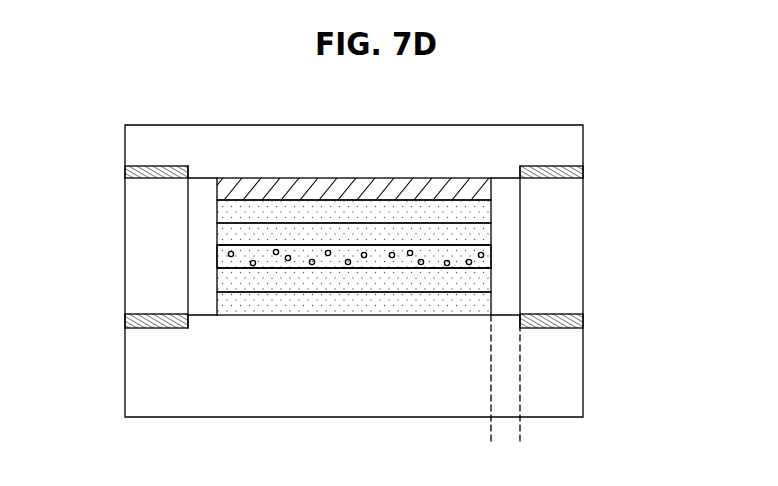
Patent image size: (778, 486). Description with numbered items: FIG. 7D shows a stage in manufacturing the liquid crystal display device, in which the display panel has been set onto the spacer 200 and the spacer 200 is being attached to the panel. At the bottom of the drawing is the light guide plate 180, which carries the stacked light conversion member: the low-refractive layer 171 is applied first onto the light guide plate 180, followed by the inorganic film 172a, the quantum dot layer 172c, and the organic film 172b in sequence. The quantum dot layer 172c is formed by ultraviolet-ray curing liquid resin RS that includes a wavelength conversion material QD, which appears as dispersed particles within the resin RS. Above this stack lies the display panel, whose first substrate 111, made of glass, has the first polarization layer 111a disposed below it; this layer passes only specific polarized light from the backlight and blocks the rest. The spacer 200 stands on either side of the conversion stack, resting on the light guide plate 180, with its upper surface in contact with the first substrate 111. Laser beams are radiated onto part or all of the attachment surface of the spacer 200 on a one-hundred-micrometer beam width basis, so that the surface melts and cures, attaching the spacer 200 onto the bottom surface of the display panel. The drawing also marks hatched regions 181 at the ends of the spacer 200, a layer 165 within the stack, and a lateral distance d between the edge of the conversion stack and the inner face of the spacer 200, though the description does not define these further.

The first substrate 111 is at (567, 148).
The first polarization layer 111a is at (478, 190).
The spacer 200 is at (567, 222).
The overcoat layer 165 is at (230, 212).
The organic film 172b is at (230, 236).
The quantum dot layer 172c is at (473, 272).
The wavelength conversion material QD is at (484, 254).
The liquid resin RS is at (483, 263).
The inorganic film 172a is at (230, 283).
The low-refractive layer 171 is at (230, 304).
The spacer 181 is at (568, 321).
The light guide plate 180 is at (567, 377).
The gap distance d is at (472, 438).